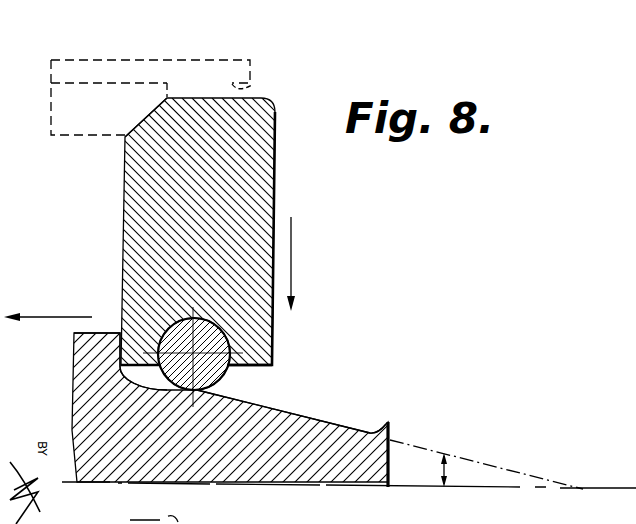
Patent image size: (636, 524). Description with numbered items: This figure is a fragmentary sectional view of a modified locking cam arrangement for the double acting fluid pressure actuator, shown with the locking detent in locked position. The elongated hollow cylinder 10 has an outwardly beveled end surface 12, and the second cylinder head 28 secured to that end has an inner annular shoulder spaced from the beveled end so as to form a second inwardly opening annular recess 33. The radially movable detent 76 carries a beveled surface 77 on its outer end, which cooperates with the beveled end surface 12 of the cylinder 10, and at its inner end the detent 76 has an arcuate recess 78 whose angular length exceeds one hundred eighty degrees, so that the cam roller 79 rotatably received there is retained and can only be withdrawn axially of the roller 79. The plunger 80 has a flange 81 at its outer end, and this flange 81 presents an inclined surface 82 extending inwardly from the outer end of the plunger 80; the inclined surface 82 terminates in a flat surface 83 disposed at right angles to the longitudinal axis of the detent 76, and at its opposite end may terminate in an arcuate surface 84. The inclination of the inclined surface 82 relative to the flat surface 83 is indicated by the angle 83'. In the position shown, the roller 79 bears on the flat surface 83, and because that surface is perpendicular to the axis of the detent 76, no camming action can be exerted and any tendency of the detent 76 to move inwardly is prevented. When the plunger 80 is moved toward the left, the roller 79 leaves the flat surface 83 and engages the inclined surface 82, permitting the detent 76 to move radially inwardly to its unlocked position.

The elongated hollow cylinder 10 is at (76, 139).
The beveled end surface 12 is at (172, 123).
The second cylinder head 28 is at (197, 60).
The second inwardly opening annular recess 33 is at (256, 83).
The radially movable detent 76 is at (275, 183).
The beveled surface 77 is at (162, 118).
The arcuate recess 78 is at (221, 330).
The cam roller 79 is at (224, 375).
The plunger 80 is at (70, 406).
The flange 81 is at (98, 333).
The inclined surface 82 is at (320, 419).
The flat surface 83 is at (152, 404).
The inclination angle 83' is at (486, 464).
The arcuate surface 84 is at (388, 423).